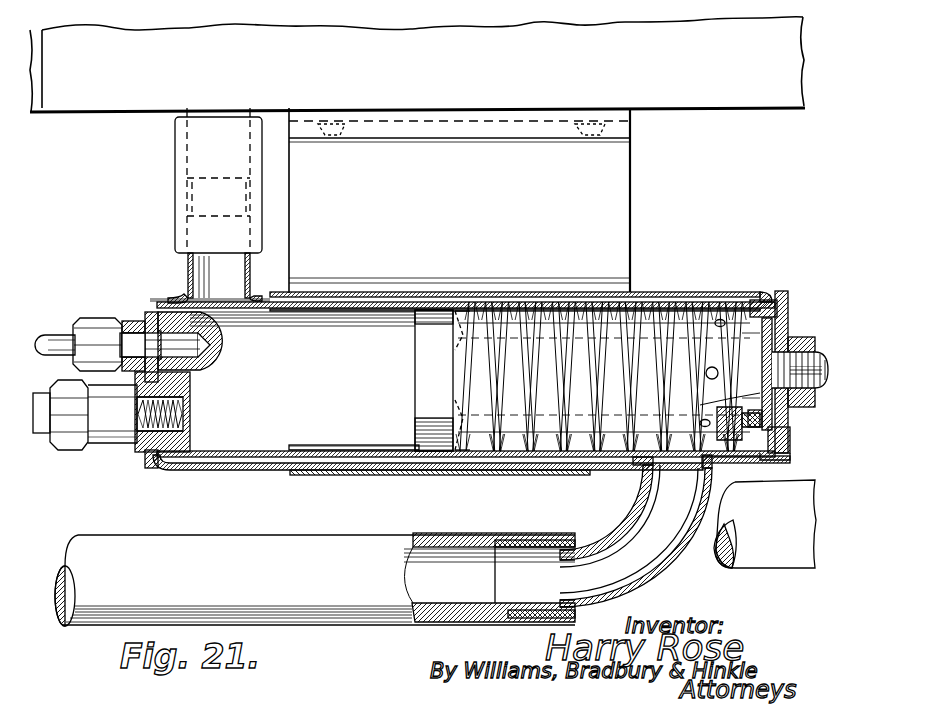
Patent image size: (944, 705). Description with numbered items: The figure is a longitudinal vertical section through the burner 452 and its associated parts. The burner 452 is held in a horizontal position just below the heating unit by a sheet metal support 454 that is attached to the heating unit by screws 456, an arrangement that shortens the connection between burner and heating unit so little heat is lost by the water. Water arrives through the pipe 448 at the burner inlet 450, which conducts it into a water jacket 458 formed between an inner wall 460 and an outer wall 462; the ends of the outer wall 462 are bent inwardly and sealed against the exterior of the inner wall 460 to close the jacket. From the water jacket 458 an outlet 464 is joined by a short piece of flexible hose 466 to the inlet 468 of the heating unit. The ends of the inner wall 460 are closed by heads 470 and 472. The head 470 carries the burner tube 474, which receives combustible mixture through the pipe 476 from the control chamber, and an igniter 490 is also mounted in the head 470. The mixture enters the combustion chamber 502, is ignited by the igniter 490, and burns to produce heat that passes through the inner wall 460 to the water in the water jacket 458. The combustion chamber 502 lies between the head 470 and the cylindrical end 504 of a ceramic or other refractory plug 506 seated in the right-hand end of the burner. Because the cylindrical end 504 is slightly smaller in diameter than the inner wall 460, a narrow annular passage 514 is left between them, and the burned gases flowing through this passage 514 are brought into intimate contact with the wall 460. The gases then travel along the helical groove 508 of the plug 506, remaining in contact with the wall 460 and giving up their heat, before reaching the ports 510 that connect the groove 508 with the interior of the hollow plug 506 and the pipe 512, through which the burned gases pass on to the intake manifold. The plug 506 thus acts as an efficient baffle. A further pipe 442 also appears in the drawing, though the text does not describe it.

The pipe 442 is at (760, 555).
The pipe 448 is at (300, 532).
The burner inlet 450 is at (635, 565).
The burner 452 is at (714, 293).
The sheet metal support 454 is at (634, 240).
The screws 456 is at (620, 140).
The water jacket 458 is at (345, 470).
The inner wall 460 is at (200, 468).
The outer wall 462 is at (246, 470).
The outlet 464 is at (190, 282).
The flexible hose 466 is at (182, 203).
The inlet 468 is at (205, 157).
The head 470 is at (148, 465).
The head 472 is at (792, 448).
The burner tube 474 is at (232, 344).
The pipe 476 is at (50, 338).
The igniter 490 is at (112, 432).
The combustion chamber 502 is at (336, 401).
The cylindrical end 504 is at (428, 365).
The refractory plug 506 is at (548, 466).
The helical groove 508 is at (486, 466).
The ports 510 is at (708, 370).
The pipe 512 is at (812, 348).
The annular passage 514 is at (412, 470).